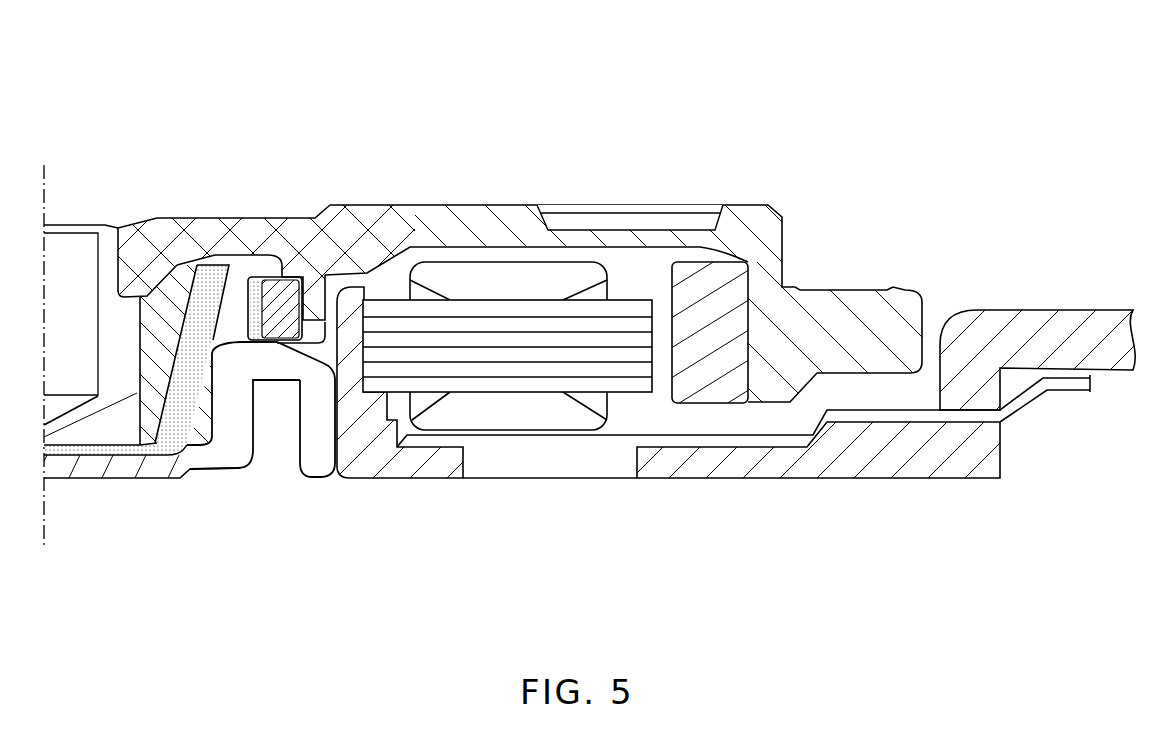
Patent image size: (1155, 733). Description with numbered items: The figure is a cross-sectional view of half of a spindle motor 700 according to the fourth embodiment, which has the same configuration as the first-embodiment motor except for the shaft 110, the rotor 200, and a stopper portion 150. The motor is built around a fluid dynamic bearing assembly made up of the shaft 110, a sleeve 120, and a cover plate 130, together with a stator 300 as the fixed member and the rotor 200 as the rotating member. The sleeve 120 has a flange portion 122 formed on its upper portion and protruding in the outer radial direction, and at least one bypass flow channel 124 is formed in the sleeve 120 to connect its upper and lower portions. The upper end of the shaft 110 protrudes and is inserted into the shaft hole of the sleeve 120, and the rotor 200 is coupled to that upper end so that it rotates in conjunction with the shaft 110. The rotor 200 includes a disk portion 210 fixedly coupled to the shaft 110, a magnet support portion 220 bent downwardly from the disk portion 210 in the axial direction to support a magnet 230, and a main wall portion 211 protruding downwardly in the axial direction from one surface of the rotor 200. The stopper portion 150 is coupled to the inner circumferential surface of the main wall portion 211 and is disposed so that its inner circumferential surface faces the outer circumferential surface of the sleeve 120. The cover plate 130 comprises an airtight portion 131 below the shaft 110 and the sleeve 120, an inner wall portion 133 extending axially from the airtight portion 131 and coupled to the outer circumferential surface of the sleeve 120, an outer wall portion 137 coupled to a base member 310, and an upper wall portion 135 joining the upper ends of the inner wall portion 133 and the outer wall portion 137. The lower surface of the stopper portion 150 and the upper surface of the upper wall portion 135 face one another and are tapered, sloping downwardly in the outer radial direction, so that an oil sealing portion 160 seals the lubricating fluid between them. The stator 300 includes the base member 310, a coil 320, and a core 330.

The spindle motor 700 is at (112, 36).
The shaft 110 is at (105, 303).
The sleeve 120 is at (157, 343).
The flange portion 122 is at (137, 393).
The bypass flow channel 124 is at (187, 392).
The cover plate 130 is at (268, 431).
The airtight portion 131 is at (162, 468).
The inner wall portion 133 is at (242, 352).
The upper wall portion 135 is at (283, 372).
The outer wall portion 137 is at (340, 470).
The stopper portion 150 is at (316, 297).
The oil sealing portion 160 is at (412, 252).
The rotor 200 is at (626, 266).
The disk portion 210 is at (487, 228).
The main wall portion 211 is at (372, 265).
The magnet support portion 220 is at (762, 268).
The magnet 230 is at (692, 283).
The stator 300 is at (713, 430).
The base member 310 is at (443, 462).
The coil 320 is at (497, 412).
The core 330 is at (547, 367).